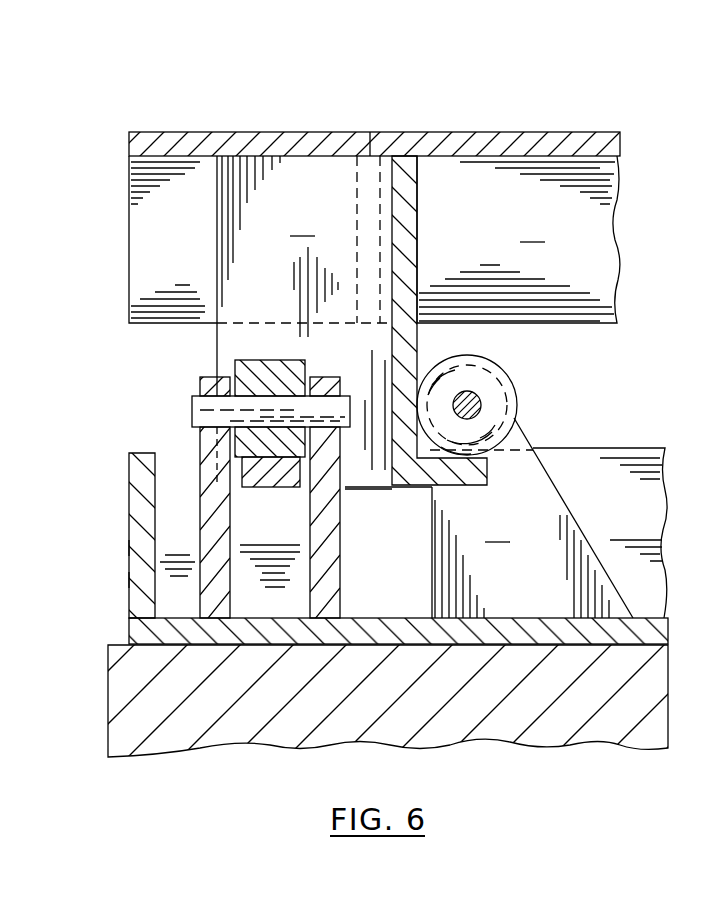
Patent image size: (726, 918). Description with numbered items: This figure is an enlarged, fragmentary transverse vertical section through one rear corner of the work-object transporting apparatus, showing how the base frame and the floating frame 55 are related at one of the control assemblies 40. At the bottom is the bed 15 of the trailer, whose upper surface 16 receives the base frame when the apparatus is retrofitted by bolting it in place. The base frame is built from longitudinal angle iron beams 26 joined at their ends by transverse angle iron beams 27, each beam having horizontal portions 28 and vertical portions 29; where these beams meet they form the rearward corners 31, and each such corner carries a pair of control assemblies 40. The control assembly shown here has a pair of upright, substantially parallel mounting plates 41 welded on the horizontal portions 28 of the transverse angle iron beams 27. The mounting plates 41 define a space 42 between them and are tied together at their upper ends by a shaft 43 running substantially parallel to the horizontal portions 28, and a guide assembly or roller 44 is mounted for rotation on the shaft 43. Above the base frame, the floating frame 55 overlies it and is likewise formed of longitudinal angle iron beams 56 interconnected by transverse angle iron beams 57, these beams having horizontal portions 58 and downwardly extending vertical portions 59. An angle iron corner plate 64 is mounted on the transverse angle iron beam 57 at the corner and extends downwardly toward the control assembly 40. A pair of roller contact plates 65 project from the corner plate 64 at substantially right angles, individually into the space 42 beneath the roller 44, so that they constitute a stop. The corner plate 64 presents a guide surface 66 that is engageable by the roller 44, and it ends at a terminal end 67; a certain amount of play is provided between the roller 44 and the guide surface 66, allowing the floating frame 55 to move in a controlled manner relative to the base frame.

The bed 15 is at (108, 690).
The upper surface 16 is at (520, 660).
The longitudinal angle iron beams 26 is at (129, 548).
The transverse angle iron beams 27 is at (620, 632).
The horizontal portions 28 is at (263, 635).
The vertical portions 29 is at (129, 520).
The rearward corners 31 is at (129, 580).
The control assembly 40 is at (186, 399).
The mounting plates 41 is at (200, 507).
The space 42 is at (265, 577).
The shaft 43 is at (200, 415).
The guide assembly or roller 44 is at (275, 360).
The floating frame 55 is at (287, 127).
The longitudinal angle iron beams 56 is at (372, 130).
The transverse angle iron beams 57 is at (127, 242).
The horizontal portions 58 is at (129, 145).
The vertical portions 59 is at (518, 239).
The angle iron corner plate 64 is at (314, 276).
The roller contact plates 65 is at (284, 488).
The guide surface 66 is at (417, 245).
The terminal end 67 is at (370, 492).